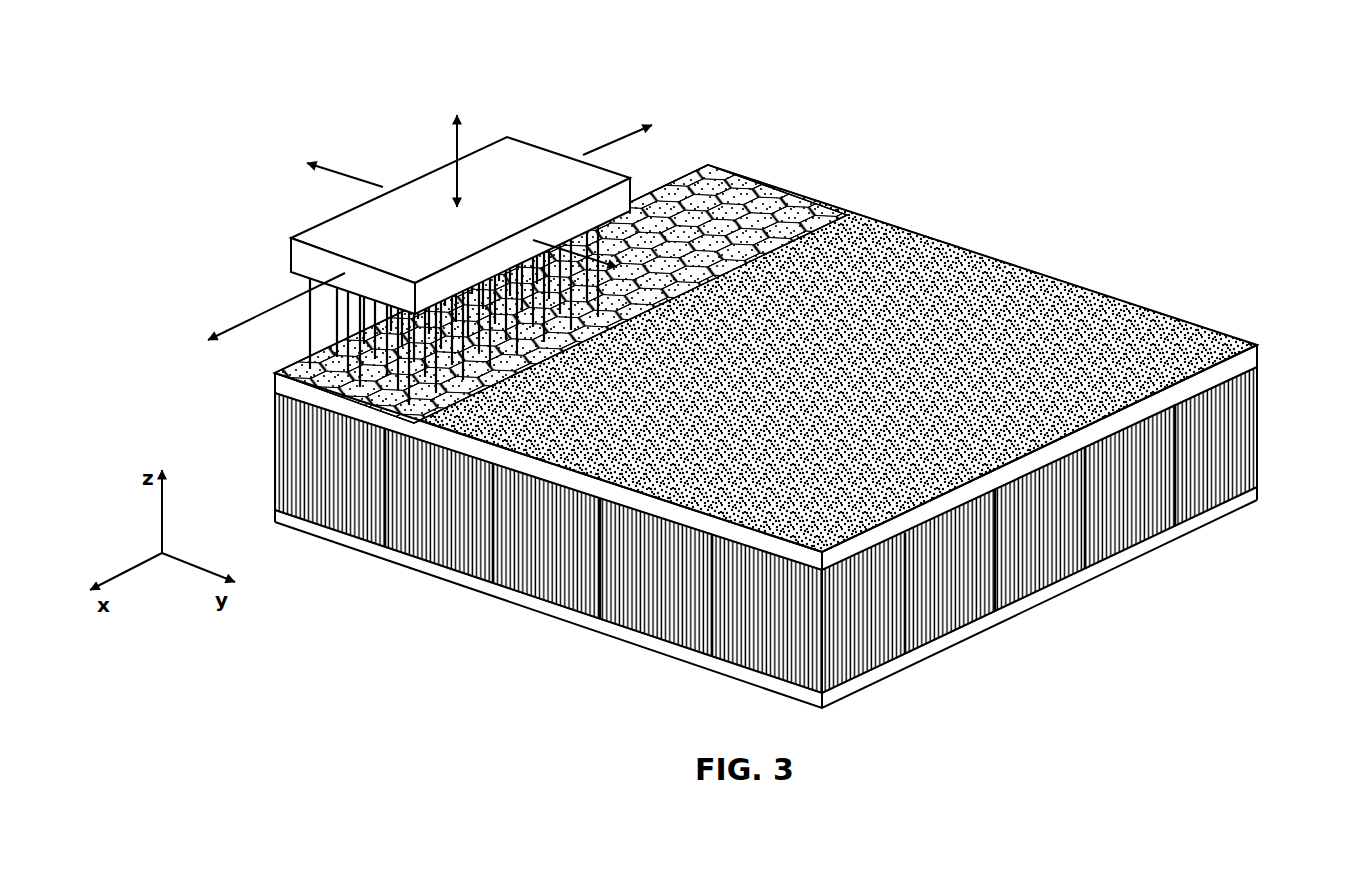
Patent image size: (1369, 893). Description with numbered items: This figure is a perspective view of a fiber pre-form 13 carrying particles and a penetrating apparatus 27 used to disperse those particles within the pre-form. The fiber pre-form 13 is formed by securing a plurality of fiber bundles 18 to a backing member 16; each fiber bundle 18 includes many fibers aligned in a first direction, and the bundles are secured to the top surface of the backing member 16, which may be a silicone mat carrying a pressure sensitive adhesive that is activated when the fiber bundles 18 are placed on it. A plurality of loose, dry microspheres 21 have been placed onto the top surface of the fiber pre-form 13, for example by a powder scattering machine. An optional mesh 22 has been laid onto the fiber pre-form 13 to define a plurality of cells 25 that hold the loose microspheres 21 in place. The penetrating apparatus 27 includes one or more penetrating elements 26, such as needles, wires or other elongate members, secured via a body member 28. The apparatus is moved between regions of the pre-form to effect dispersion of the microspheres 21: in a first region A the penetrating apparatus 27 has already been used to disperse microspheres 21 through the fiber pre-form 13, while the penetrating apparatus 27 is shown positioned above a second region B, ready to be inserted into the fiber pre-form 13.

The fiber pre-form 13 is at (818, 399).
The backing member 16 is at (1077, 575).
The fiber bundles 18 is at (1180, 470).
The microspheres 21 is at (900, 243).
The mesh 22 is at (1243, 360).
The cells 25 is at (765, 187).
The penetrating elements 26 is at (315, 342).
The penetrating apparatus 27 is at (447, 147).
The body member 28 is at (309, 232).
The first region A is at (657, 177).
The second region B is at (287, 355).